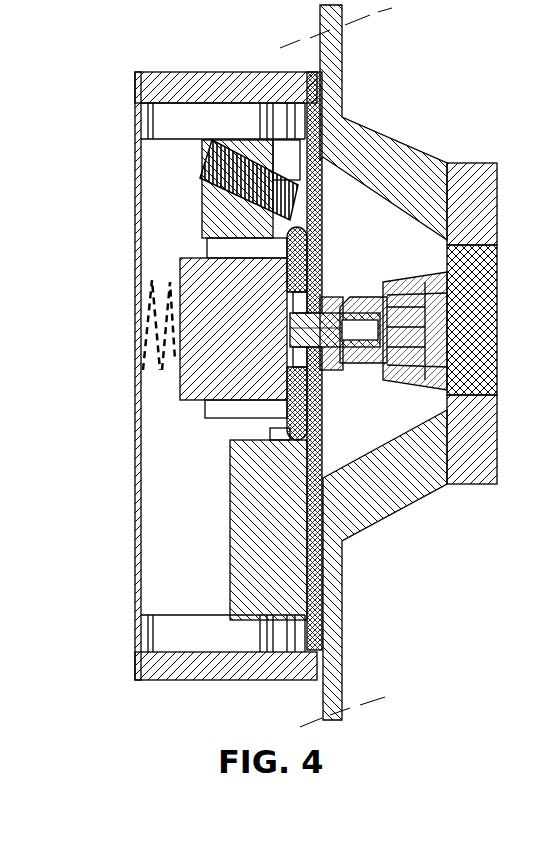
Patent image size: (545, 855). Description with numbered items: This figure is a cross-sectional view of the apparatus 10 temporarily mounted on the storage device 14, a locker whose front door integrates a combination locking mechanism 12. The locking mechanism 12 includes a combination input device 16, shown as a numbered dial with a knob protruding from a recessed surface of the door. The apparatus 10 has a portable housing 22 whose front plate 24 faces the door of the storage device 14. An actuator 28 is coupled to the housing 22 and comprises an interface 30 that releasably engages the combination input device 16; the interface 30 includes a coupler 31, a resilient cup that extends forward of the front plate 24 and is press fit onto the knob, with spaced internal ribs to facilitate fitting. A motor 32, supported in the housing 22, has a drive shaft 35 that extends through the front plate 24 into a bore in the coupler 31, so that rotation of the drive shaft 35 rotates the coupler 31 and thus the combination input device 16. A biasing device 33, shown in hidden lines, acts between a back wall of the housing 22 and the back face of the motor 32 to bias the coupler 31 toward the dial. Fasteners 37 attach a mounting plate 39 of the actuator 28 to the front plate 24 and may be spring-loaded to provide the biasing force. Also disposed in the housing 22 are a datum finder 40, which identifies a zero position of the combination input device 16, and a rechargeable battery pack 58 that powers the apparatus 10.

The apparatus 10 is at (98, 82).
The locking mechanism 12 is at (483, 414).
The storage device 14 is at (424, 138).
The combination input device 16 is at (428, 297).
The housing 22 is at (142, 683).
The front plate 24 is at (315, 138).
The actuator 28 is at (168, 410).
The interface 30 is at (396, 412).
The coupler 31 is at (387, 278).
The motor 32 is at (220, 377).
The biasing device 33 is at (140, 352).
The drive shaft 35 is at (326, 335).
The fasteners 37 is at (255, 410).
The mounting plate 39 is at (293, 410).
The datum finder 40 is at (178, 166).
The rechargeable battery pack 58 is at (292, 570).